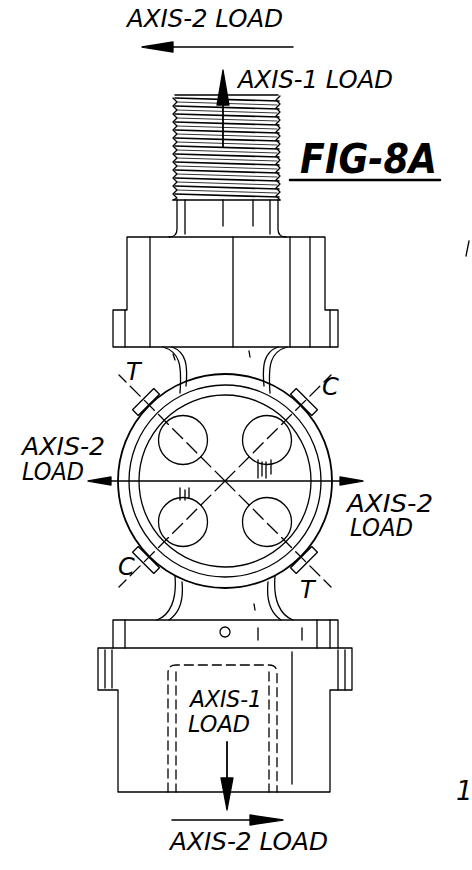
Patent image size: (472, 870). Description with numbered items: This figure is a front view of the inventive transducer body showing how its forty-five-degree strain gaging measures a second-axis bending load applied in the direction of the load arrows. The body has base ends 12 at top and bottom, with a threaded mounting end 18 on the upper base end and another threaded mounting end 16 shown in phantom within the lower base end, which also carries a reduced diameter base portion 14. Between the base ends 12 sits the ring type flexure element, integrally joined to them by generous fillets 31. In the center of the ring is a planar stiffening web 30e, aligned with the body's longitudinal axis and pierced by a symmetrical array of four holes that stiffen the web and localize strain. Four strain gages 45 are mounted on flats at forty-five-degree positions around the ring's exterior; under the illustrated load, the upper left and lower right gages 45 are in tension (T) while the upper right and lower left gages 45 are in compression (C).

The threaded mounting end 18 is at (185, 150).
The base end 12 is at (304, 277).
The fillet 31 is at (288, 370).
The stiffening web 30e is at (320, 467).
The 45° strain gage 45 is at (147, 404).
The reduced diameter base portion 14 is at (340, 632).
The threaded mounting end 16 is at (182, 768).